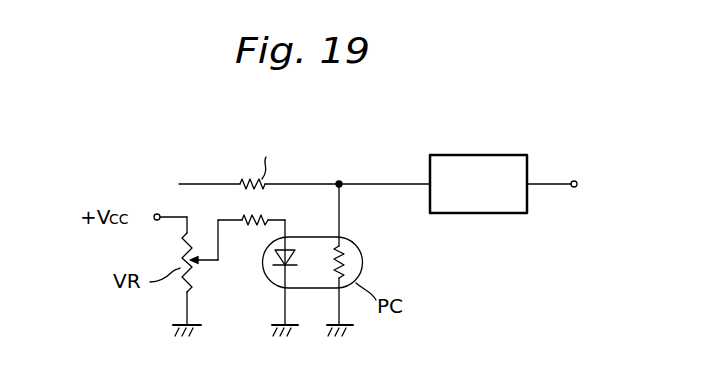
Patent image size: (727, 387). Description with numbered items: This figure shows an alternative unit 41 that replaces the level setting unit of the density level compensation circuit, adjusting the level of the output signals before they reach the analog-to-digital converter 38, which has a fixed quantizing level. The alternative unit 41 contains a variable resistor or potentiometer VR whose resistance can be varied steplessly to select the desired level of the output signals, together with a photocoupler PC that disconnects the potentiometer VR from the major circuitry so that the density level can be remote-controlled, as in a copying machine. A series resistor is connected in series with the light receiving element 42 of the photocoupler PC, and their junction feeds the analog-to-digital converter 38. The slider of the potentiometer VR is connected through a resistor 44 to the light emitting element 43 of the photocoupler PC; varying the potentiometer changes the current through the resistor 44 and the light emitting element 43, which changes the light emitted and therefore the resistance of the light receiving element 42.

The analog-to-digital converter 38 is at (500, 214).
The alternative unit 41 is at (304, 145).
The light receiving element 42 is at (363, 252).
The light emitting element 43 is at (263, 262).
The resistor 44 is at (267, 218).